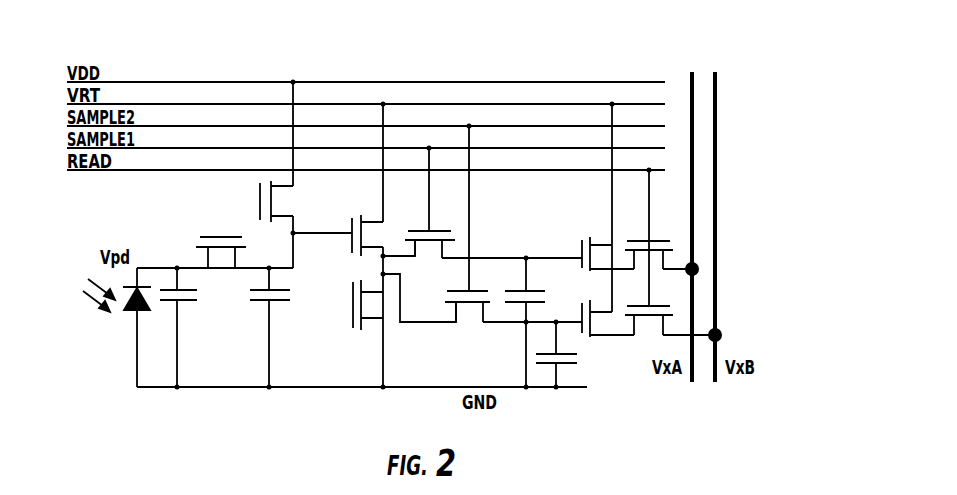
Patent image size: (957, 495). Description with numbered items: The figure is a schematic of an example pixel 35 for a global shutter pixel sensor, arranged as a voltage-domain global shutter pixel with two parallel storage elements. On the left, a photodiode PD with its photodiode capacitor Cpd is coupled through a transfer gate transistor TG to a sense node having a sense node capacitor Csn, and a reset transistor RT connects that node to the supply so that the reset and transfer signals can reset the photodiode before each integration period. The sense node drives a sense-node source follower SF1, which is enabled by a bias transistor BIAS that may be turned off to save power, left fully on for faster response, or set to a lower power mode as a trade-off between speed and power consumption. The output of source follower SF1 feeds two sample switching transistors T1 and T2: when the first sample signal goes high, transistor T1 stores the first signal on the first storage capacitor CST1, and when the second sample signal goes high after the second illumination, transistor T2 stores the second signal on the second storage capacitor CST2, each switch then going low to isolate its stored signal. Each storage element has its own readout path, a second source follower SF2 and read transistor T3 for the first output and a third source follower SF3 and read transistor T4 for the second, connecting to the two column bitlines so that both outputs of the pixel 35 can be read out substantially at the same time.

The pixel 35 is at (727, 39).
The reset transistor RT is at (260, 202).
The transfer gate transistor TG is at (222, 237).
The photodiode PD is at (117, 327).
The photodiode capacitor Cpd is at (187, 327).
The sense node capacitor Csn is at (277, 327).
The sense-node source follower transistor SF1 is at (356, 219).
The bias transistor BIAS is at (353, 292).
The first sample switching transistor T1 is at (430, 231).
The second sample switching transistor T2 is at (463, 295).
The first storage capacitor CST1 is at (535, 322).
The second storage capacitor CST2 is at (575, 354).
The second source follower transistor SF2 is at (598, 244).
The third source follower transistor SF3 is at (598, 309).
The first read switching transistor T3 is at (658, 242).
The second read switching transistor T4 is at (670, 308).